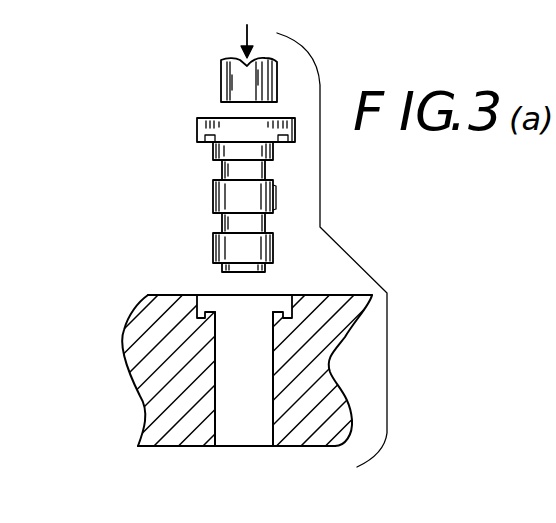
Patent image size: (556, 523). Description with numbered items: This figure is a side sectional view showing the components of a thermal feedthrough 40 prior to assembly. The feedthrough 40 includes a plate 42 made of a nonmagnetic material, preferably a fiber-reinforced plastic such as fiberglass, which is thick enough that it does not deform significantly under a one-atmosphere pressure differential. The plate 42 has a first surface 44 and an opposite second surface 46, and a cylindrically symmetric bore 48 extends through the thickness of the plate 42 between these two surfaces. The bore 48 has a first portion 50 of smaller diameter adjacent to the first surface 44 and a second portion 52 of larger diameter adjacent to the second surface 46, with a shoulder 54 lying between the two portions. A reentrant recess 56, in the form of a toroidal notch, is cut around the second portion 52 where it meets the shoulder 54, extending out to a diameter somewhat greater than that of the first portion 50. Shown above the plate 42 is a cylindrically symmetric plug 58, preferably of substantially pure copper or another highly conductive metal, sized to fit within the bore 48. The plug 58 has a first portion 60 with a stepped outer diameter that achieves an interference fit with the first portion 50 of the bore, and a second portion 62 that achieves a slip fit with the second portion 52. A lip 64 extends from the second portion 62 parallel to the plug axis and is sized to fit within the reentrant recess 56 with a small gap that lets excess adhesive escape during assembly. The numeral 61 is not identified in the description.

The feedthrough 40 is at (180, 241).
The plate 42 is at (134, 393).
The first surface 44 is at (160, 447).
The second surface 46 is at (157, 296).
The bore 48 is at (263, 441).
The first portion of the bore 50 is at (271, 373).
The second portion of the bore 52 is at (292, 305).
The shoulder 54 is at (205, 300).
The reentrant recess 56 is at (296, 312).
The plug 58 is at (283, 193).
The first portion of the plug 60 is at (274, 207).
The screw insert 61 is at (184, 179).
The second portion of the plug 62 is at (199, 118).
The lip 64 is at (199, 142).